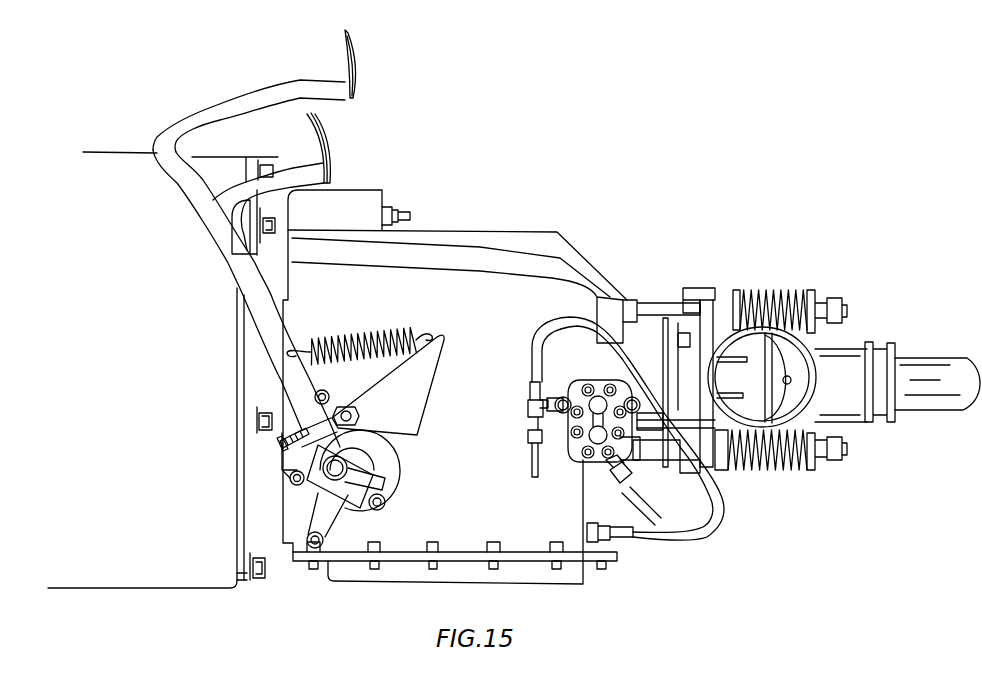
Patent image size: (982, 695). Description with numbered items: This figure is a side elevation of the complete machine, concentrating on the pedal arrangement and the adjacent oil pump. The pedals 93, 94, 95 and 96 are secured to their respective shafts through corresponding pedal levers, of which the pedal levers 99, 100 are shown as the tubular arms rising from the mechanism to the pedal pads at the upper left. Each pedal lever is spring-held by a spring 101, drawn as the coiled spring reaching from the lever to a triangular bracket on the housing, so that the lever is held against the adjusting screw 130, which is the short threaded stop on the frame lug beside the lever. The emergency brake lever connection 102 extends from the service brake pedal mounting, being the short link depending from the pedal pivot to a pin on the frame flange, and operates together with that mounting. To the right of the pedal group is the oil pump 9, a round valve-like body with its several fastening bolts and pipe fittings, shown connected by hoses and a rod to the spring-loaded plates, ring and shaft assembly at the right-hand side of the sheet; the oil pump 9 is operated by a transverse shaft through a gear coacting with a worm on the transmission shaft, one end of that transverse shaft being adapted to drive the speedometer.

The oil pump 9 is at (582, 388).
The pedal 93 is at (307, 117).
The pedal 94 is at (318, 128).
The pedal 95 is at (327, 140).
The pedal 96 is at (355, 58).
The pedal lever 99 is at (223, 197).
The pedal lever 100 is at (227, 263).
The spring 101 is at (372, 342).
The emergency brake lever connection 102 is at (313, 517).
The adjusting screw 130 is at (297, 433).